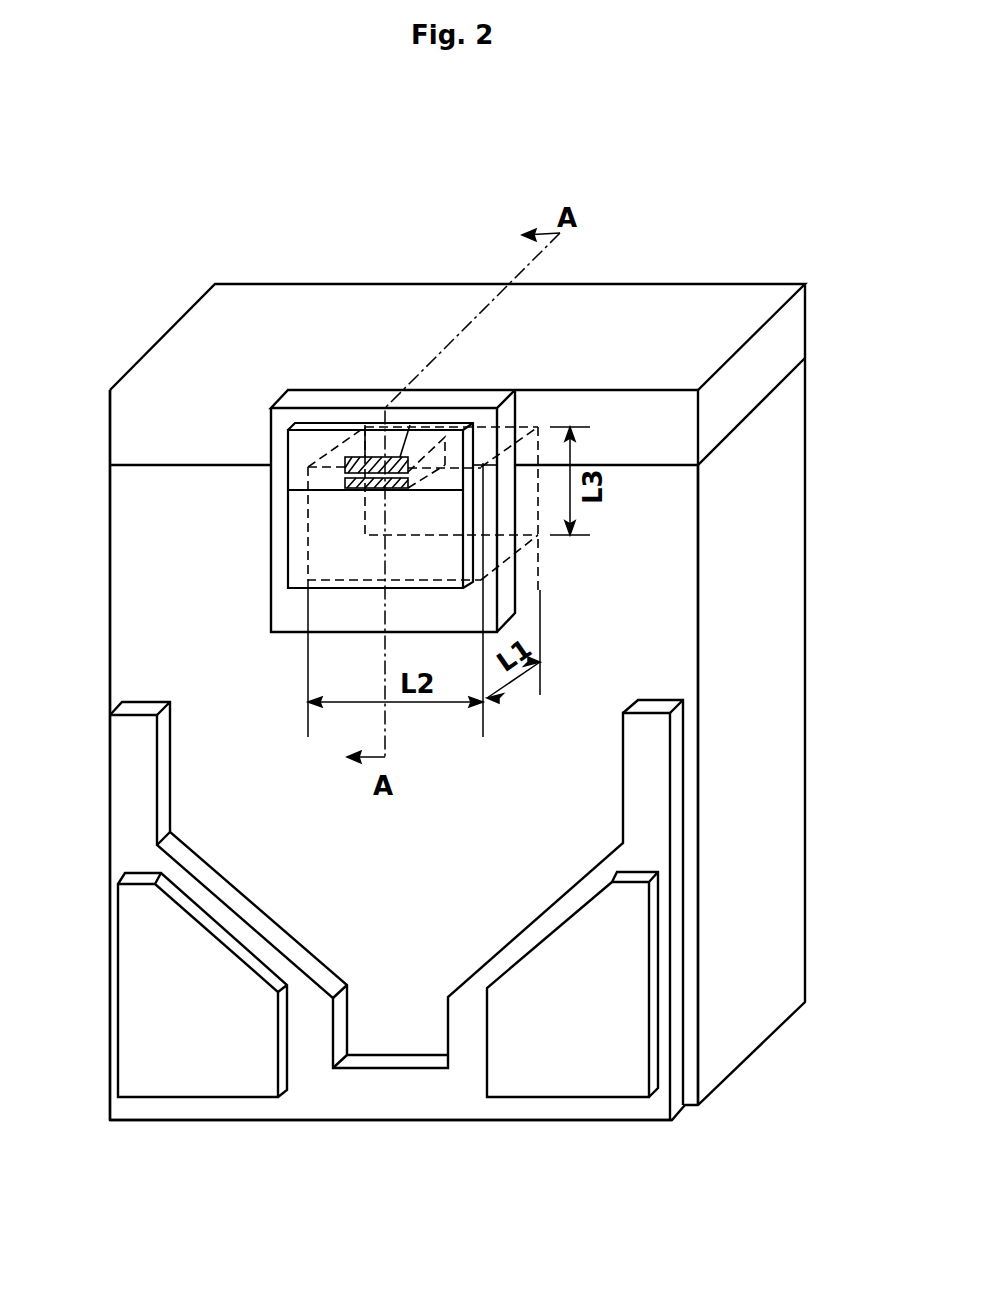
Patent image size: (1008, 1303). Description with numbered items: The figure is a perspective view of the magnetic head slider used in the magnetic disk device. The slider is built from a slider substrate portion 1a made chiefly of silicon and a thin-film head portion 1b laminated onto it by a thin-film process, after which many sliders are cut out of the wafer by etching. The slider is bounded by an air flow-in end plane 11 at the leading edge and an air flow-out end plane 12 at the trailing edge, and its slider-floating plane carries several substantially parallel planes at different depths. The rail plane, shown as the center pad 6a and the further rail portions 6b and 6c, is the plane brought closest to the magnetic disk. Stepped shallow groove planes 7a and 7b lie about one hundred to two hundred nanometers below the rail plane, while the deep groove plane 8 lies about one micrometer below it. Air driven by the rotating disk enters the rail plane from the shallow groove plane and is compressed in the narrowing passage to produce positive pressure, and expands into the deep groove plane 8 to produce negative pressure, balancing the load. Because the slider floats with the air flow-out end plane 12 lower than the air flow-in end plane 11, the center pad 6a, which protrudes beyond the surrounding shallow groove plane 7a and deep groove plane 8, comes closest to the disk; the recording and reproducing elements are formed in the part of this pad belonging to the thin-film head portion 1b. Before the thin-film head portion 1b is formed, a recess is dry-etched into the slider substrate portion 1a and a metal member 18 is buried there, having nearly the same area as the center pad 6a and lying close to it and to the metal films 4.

The slider substrate portion 1a is at (790, 478).
The thin-film head portion 1b is at (790, 337).
The metal films 4 is at (416, 427).
The center pad 6a is at (292, 568).
The rail plane 6b is at (192, 1012).
The rail plane 6c is at (583, 1013).
The shallow groove plane 7a is at (283, 617).
The shallow groove plane 7b is at (392, 1093).
The deep groove plane 8 is at (122, 652).
The air flow-in end plane 11 is at (308, 1122).
The air flow-out end plane 12 is at (297, 296).
The metal member 18 is at (520, 427).